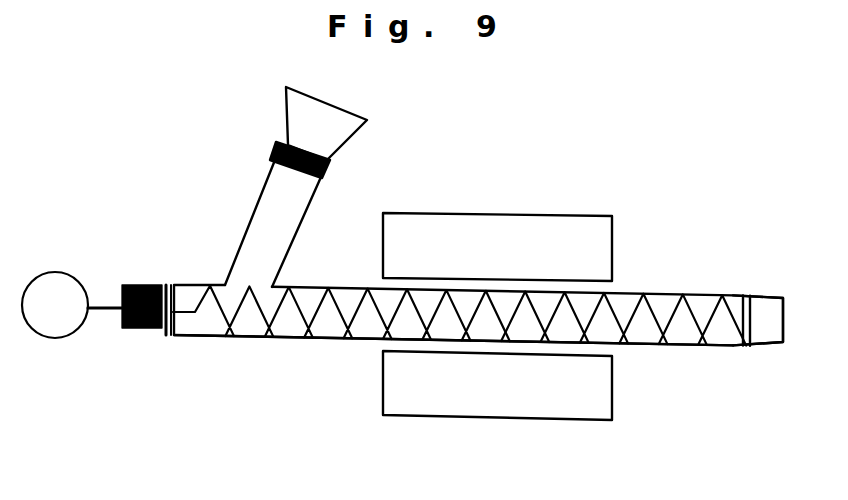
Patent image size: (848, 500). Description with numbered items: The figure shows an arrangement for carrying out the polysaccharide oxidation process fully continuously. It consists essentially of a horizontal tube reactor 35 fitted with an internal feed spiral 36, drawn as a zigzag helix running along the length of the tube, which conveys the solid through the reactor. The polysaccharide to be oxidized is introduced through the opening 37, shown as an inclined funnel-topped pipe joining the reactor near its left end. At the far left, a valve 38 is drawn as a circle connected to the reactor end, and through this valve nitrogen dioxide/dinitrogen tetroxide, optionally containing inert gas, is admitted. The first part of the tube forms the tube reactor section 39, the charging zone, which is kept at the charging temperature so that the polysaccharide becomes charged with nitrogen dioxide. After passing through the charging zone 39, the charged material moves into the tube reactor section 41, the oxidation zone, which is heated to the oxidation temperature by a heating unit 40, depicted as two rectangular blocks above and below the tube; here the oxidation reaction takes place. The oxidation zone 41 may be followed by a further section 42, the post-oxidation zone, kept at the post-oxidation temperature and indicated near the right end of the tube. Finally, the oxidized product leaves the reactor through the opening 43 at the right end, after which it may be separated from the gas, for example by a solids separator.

The tube reactor 35 is at (332, 347).
The internal feed spiral 36 is at (375, 337).
The opening 37 is at (235, 273).
The valve 38 is at (47, 265).
The tube reactor section (charging zone) 39 is at (340, 283).
The heating unit 40 is at (440, 378).
The tube reactor section (oxidation zone) 41 is at (520, 332).
The section (post-oxidation zone) 42 is at (667, 288).
The opening 43 is at (785, 297).